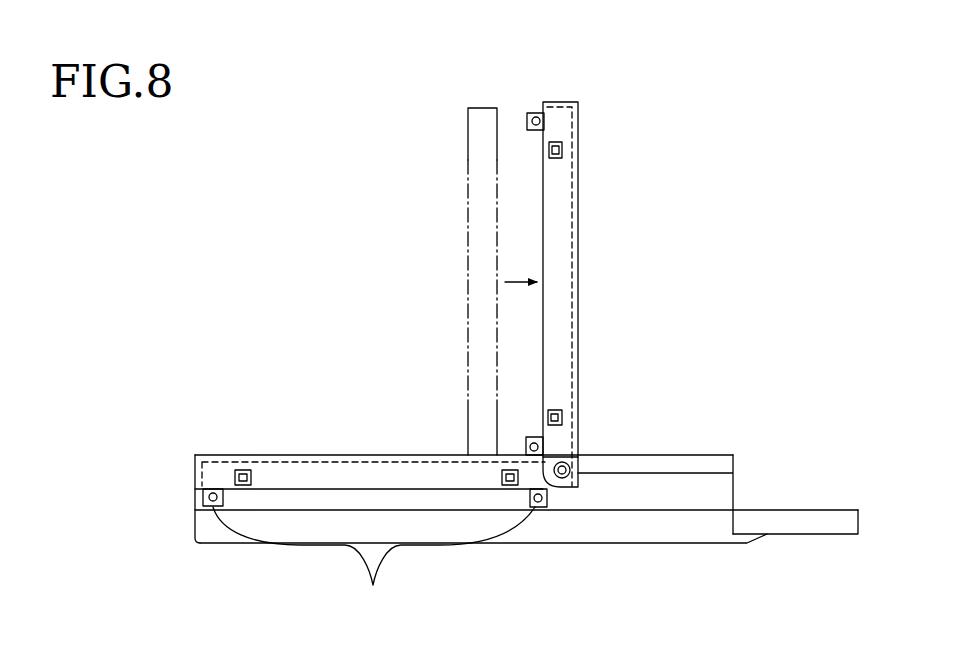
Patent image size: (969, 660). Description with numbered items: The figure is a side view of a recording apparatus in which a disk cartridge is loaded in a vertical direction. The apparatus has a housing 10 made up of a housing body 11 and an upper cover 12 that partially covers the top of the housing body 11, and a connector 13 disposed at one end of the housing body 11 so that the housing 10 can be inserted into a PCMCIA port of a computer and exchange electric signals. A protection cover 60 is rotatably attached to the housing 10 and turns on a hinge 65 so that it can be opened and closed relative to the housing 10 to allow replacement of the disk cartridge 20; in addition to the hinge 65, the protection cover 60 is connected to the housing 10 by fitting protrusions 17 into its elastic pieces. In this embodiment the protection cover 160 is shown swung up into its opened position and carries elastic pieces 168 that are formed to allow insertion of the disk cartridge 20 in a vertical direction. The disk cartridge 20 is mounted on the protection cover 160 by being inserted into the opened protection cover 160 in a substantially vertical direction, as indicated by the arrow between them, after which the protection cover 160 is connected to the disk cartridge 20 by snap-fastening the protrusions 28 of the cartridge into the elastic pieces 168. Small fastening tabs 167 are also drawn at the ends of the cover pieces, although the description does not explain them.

The housing 10 is at (785, 442).
The housing body 11 is at (672, 525).
The upper cover 12 is at (688, 457).
The connector 13 is at (815, 528).
The protrusions 17 is at (374, 562).
The disk cartridge 20 is at (292, 336).
The protrusions 28 is at (482, 148).
The protection cover 60 is at (212, 462).
The hinge 65 is at (568, 463).
The protection cover 160 is at (578, 200).
The fastening tab 167 is at (527, 113).
The elastic pieces 168 is at (562, 150).